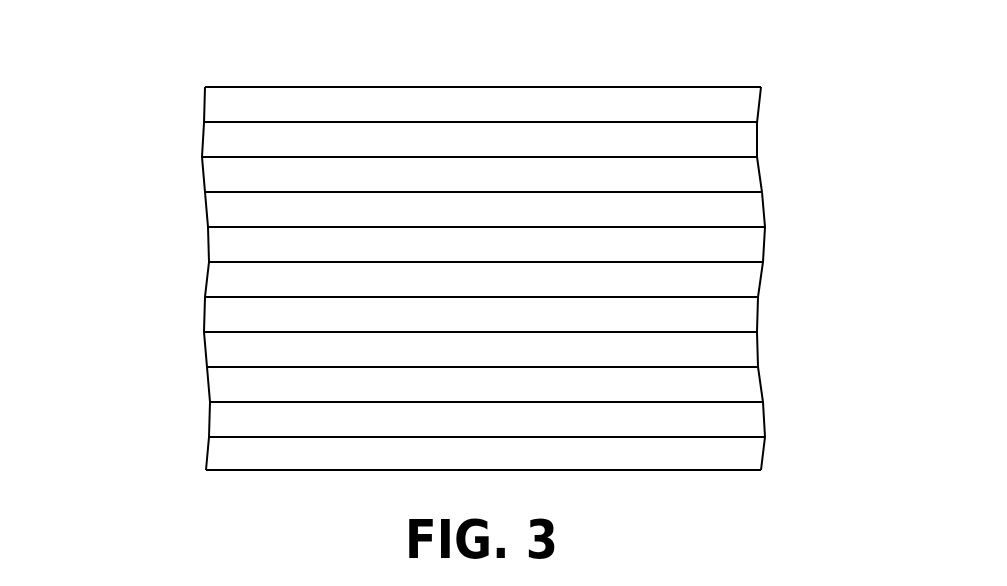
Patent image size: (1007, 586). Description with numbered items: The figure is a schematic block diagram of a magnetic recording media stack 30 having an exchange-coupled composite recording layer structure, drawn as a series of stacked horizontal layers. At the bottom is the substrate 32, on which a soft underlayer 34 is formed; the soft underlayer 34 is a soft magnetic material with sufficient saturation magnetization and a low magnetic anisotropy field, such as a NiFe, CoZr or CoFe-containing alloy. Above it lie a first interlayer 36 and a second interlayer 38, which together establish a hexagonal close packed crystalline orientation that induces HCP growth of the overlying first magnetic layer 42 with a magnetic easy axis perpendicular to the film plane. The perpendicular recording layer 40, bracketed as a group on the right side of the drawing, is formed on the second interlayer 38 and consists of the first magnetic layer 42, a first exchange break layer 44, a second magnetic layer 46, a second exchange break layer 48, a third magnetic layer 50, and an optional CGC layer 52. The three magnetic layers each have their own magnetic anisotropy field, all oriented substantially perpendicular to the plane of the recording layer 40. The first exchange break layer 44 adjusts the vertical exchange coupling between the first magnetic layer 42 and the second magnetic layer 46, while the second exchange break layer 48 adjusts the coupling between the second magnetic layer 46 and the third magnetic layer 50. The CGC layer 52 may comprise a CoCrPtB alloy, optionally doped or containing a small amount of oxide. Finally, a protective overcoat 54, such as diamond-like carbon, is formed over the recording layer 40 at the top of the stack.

The multilayer structure 30 is at (78, 32).
The substrate 32 is at (223, 452).
The soft underlayer 34 is at (223, 417).
The first interlayer 36 is at (223, 382).
The second interlayer 38 is at (223, 347).
The perpendicular recording layer 40 is at (845, 123).
The first magnetic layer 42 is at (223, 312).
The first exchange break layer 44 is at (223, 277).
The second magnetic layer 46 is at (223, 242).
The second exchange break layer 48 is at (223, 207).
The third magnetic layer 50 is at (223, 172).
The CGC layer 52 is at (223, 137).
The protective overcoat 54 is at (223, 102).